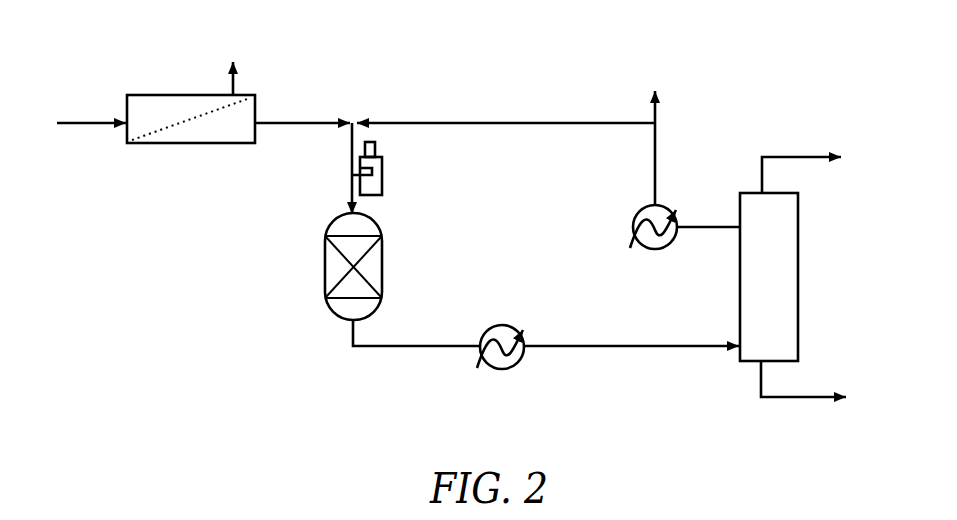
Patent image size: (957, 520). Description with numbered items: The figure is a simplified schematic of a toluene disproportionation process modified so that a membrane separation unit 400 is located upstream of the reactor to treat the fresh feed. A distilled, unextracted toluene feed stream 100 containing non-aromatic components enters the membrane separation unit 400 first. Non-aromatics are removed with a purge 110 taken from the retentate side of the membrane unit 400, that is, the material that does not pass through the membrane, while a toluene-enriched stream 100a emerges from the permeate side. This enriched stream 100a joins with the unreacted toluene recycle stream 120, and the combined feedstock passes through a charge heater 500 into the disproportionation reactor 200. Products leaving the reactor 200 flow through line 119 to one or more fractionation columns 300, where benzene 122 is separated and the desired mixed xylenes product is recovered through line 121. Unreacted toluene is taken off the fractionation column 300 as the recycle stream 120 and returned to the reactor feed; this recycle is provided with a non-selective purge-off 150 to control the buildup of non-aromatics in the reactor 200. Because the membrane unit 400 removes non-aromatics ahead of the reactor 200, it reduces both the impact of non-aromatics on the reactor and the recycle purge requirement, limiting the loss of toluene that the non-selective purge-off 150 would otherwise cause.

The toluene feed stream 100 is at (100, 126).
The purge 110 is at (234, 61).
The membrane separation unit 400 is at (204, 144).
The toluene-enriched stream 100a is at (328, 126).
The charge heater 500 is at (383, 163).
The disproportionation reactor 200 is at (325, 283).
The reactor product line 119 is at (446, 348).
The recycle stream 120 is at (476, 126).
The purge-off 150 is at (657, 92).
The fractionation column 300 is at (790, 286).
The benzene stream 122 is at (825, 168).
The mixed xylenes line 121 is at (823, 387).